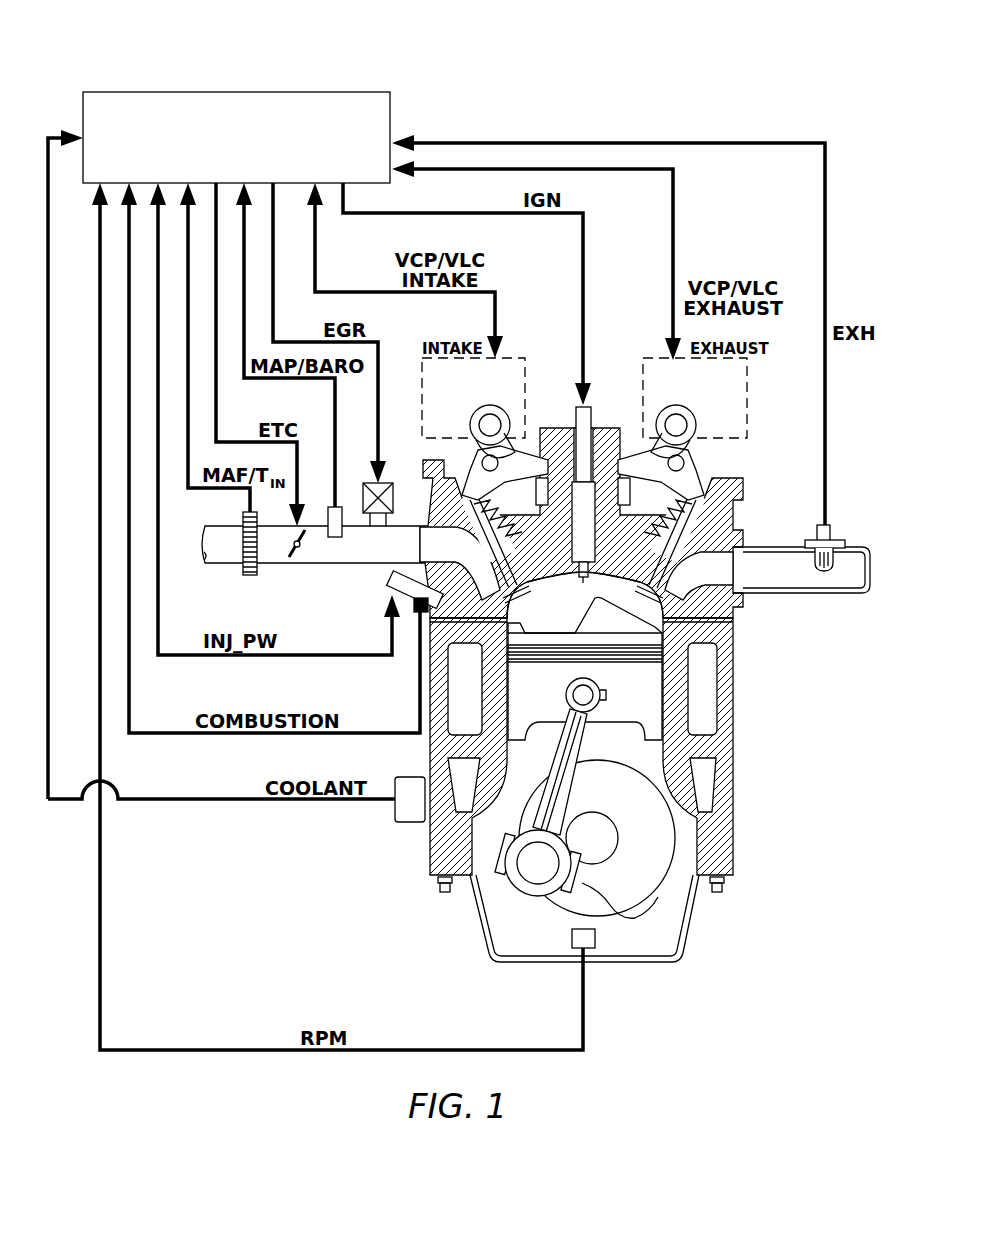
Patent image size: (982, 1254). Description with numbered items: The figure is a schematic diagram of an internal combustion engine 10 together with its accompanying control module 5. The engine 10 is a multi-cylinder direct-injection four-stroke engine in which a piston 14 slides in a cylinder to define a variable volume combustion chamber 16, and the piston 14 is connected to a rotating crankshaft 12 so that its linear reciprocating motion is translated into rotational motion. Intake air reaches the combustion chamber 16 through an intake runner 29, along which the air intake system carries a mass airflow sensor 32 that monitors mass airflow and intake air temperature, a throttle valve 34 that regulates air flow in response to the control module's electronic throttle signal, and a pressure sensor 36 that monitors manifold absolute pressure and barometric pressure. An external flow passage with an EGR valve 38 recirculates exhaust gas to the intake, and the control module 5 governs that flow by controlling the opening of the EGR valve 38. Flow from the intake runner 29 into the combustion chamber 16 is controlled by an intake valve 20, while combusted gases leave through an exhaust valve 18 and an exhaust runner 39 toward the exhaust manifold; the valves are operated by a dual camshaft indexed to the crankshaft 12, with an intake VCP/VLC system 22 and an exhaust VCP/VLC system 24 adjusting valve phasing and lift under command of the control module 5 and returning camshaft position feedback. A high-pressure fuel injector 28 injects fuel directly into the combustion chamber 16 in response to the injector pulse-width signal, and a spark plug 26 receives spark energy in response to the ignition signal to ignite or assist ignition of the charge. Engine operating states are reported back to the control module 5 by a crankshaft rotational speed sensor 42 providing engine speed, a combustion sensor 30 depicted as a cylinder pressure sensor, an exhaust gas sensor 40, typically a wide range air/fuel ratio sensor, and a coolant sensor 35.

The control module 5 is at (347, 92).
The internal combustion engine 10 is at (723, 750).
The crankshaft 12 is at (638, 893).
The piston 14 is at (644, 705).
The combustion chamber 16 is at (562, 620).
The exhaust valve 18 is at (655, 584).
The intake valve 20 is at (512, 568).
The intake VCP/VLC system 22 is at (516, 358).
The exhaust VCP/VLC system 24 is at (747, 412).
The spark plug 26 is at (589, 412).
The fuel injector 28 is at (397, 577).
The intake runner 29 is at (407, 530).
The combustion sensor 30 is at (420, 612).
The mass airflow sensor 32 is at (250, 577).
The throttle valve 34 is at (295, 558).
The coolant sensor 35 is at (410, 807).
The pressure sensor 36 is at (335, 537).
The EGR valve 38 is at (370, 513).
The exhaust runner 39 is at (723, 562).
The exhaust gas sensor 40 is at (833, 536).
The crankshaft rotational speed sensor 42 is at (572, 947).